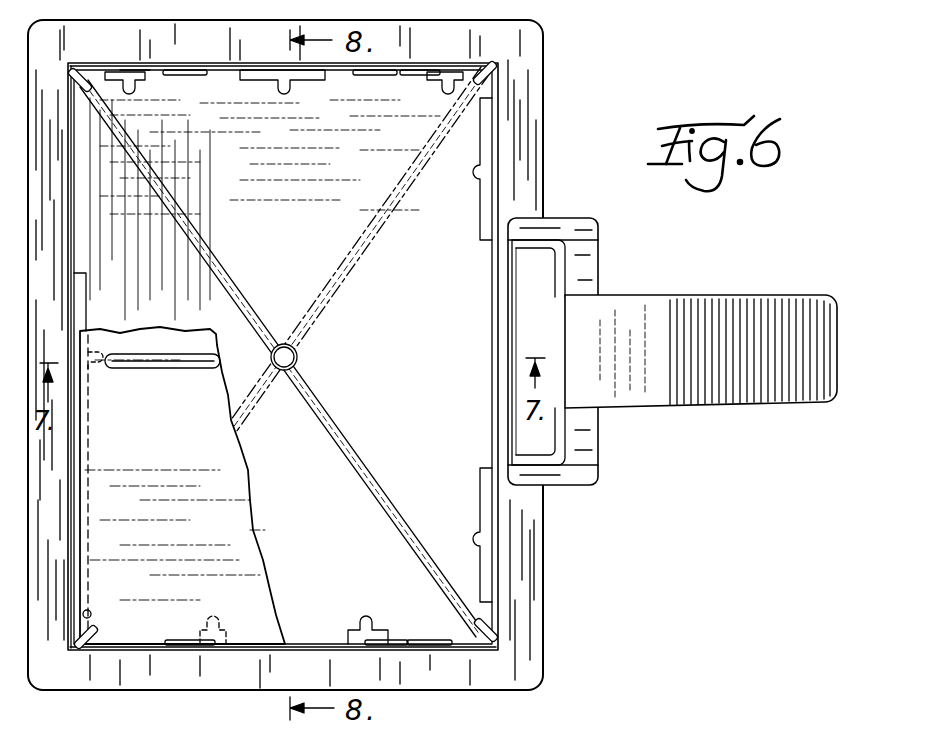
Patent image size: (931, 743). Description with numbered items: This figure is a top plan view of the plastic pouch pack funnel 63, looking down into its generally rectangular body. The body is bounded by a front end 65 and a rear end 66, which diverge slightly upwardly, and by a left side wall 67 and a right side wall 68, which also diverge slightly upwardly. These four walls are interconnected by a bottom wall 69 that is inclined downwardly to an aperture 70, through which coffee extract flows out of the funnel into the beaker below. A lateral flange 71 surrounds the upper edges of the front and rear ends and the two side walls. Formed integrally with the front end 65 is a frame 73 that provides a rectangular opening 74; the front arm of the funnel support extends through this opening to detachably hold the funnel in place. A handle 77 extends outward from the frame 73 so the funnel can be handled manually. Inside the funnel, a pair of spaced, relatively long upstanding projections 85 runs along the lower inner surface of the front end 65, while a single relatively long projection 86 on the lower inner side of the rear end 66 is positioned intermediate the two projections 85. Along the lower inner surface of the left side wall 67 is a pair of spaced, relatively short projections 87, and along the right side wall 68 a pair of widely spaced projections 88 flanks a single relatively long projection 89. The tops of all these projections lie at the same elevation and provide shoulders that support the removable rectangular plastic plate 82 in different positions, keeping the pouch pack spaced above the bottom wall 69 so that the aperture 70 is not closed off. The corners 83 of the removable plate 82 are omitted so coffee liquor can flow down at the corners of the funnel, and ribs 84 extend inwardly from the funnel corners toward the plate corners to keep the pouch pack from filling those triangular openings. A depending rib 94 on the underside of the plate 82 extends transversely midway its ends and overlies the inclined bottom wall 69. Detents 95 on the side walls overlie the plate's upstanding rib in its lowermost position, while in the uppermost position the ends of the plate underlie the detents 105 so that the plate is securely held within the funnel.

The pouch pack funnel 63 is at (573, 103).
The front end 65 is at (496, 318).
The rear end 66 is at (71, 229).
The left side wall 67 is at (309, 642).
The right side wall 68 is at (231, 68).
The bottom wall 69 is at (400, 393).
The aperture 70 is at (294, 358).
The lateral flange 71 is at (532, 43).
The frame 73 is at (602, 244).
The rectangular opening 74 is at (534, 262).
The handle 77 is at (688, 310).
The removable plate 82 is at (165, 468).
The corners 83 is at (86, 626).
The ribs 84 is at (91, 97).
The projections 85 is at (487, 213).
The projection 86 is at (83, 291).
The projections 87 is at (220, 628).
The projections 88 is at (140, 81).
The projection 89 is at (306, 77).
The depending rib 94 is at (193, 364).
The detents 95 is at (140, 72).
The detents 105 is at (202, 73).